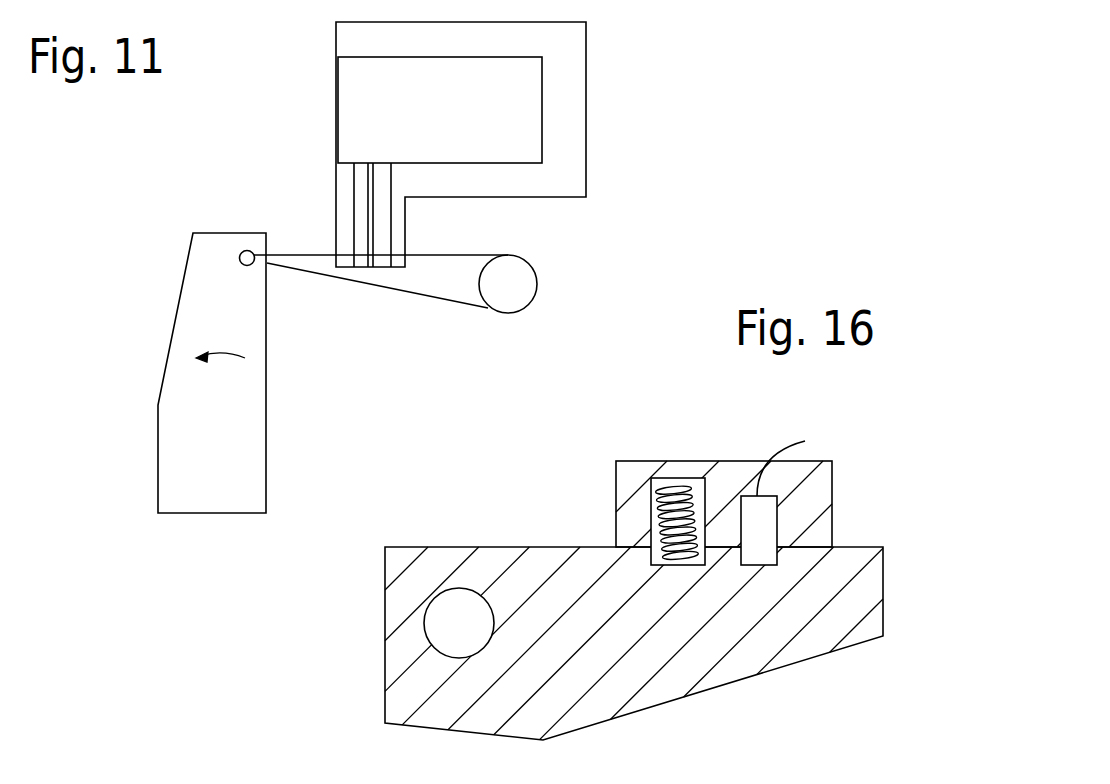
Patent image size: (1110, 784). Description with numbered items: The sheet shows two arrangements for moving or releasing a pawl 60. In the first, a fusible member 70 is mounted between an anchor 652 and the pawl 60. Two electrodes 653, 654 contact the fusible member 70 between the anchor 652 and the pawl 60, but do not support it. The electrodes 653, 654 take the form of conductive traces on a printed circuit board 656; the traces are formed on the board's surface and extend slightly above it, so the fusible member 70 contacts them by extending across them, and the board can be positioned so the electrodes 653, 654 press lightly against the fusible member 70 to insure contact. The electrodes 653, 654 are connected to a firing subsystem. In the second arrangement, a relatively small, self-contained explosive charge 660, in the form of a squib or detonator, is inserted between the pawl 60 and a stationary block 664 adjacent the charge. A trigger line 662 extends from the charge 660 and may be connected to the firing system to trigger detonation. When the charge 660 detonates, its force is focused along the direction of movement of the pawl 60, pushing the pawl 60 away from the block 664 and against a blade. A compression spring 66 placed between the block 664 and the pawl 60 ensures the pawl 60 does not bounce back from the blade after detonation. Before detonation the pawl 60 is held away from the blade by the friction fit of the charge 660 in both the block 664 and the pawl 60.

In FIG. 11, the printed circuit board 656 is at (573, 87).
In FIG. 11, the electrode 653 is at (354, 224).
In FIG. 11, the electrode 654 is at (391, 209).
In FIG. 11, the anchor 652 is at (515, 277).
In FIG. 11, the fusible member 70 is at (380, 288).
In FIG. 11, the pawl 60 is at (195, 456).
In FIG. 16, the pawl 60 is at (598, 656).
In FIG. 16, the stationary block 664 is at (615, 502).
In FIG. 16, the compression spring 66 is at (660, 538).
In FIG. 16, the trigger line 662 is at (783, 456).
In FIG. 16, the explosive charge 660 is at (768, 566).